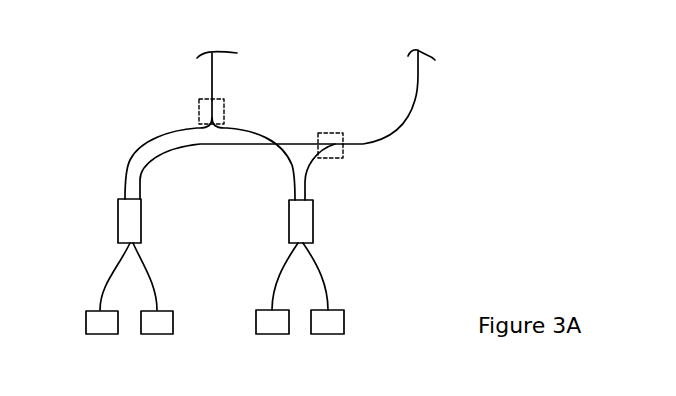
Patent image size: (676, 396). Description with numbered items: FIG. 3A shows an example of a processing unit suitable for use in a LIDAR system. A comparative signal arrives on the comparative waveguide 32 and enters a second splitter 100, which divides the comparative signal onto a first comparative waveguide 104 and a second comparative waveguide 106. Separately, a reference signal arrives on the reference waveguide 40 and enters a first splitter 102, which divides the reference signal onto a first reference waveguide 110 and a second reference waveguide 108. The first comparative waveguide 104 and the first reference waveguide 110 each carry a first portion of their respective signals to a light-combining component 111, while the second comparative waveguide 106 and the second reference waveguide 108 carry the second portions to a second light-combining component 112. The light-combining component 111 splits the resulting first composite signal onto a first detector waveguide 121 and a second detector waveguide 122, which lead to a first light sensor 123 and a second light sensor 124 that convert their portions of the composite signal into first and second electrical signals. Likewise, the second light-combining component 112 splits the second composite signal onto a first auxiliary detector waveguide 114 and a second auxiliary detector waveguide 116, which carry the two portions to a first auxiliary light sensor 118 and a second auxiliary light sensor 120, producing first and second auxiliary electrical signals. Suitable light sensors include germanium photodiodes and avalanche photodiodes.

The comparative waveguide 32 is at (210, 73).
The reference waveguide 40 is at (399, 129).
The second splitter 100 is at (199, 106).
The first splitter 102 is at (333, 133).
The first comparative waveguide 104 is at (135, 152).
The second comparative waveguide 106 is at (289, 158).
The second reference waveguide 108 is at (308, 172).
The first reference waveguide 110 is at (180, 148).
The light-combining component 111 is at (176, 194).
The second light-combining component 112 is at (314, 232).
The first auxiliary detector waveguide 114 is at (278, 275).
The second auxiliary detector waveguide 116 is at (320, 283).
The first auxiliary light sensor 118 is at (257, 312).
The second auxiliary light sensor 120 is at (343, 310).
The first detector waveguide 121 is at (108, 278).
The second detector waveguide 122 is at (139, 267).
The first light sensor 123 is at (87, 310).
The second light sensor 124 is at (158, 335).